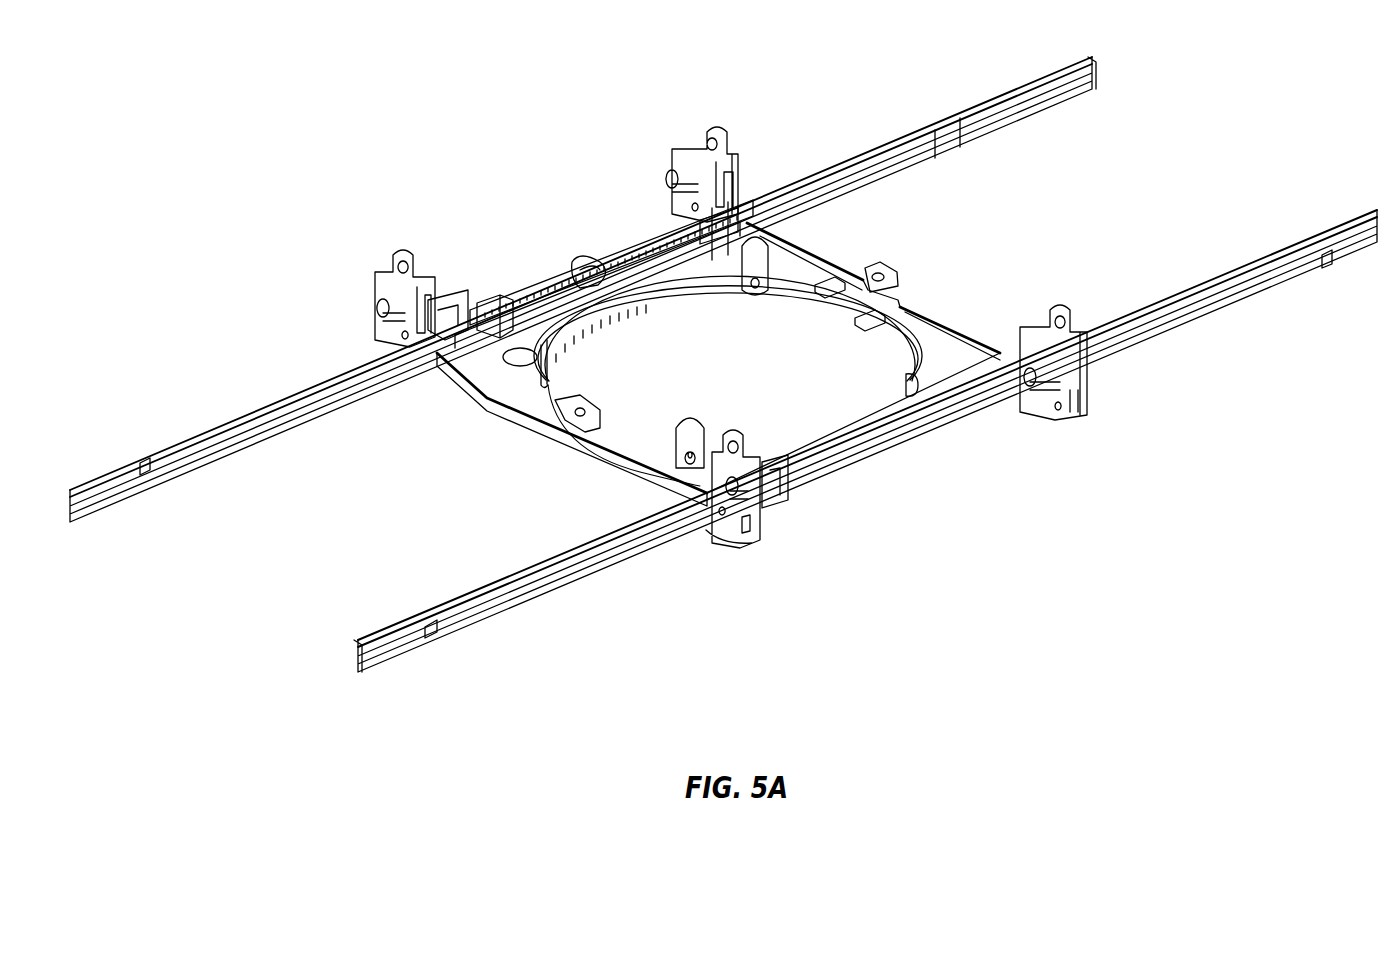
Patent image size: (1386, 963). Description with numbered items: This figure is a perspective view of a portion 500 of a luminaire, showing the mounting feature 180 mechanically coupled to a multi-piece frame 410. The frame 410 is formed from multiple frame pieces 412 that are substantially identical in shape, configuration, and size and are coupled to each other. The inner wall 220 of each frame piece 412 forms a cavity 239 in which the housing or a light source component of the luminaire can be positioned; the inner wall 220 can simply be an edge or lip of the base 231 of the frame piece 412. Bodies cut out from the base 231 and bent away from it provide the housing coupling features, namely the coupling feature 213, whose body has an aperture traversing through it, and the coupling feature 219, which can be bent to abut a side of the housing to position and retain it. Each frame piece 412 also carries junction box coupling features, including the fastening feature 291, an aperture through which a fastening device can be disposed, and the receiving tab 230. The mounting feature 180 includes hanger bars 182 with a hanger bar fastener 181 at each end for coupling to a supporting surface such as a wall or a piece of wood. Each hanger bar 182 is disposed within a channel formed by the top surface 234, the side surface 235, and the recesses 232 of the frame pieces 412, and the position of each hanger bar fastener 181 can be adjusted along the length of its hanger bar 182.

The portion of the luminaire 500 is at (376, 72).
The multi-piece frame 410 is at (512, 190).
The junction box coupling feature 291 is at (585, 260).
The top surface 234 is at (647, 236).
The side surface 235 is at (622, 268).
The receiving tab 230 is at (540, 310).
The recess 232 is at (488, 305).
The base 231 is at (760, 232).
The hanger bar 182 is at (970, 132).
The cavity 239 is at (593, 346).
The inner wall 220 is at (640, 318).
The frame piece 412 is at (812, 326).
The coupling feature 219 is at (905, 385).
The coupling feature 213 is at (708, 428).
The hanger bar fastener 181 is at (1082, 415).
The mounting feature 180 is at (484, 622).